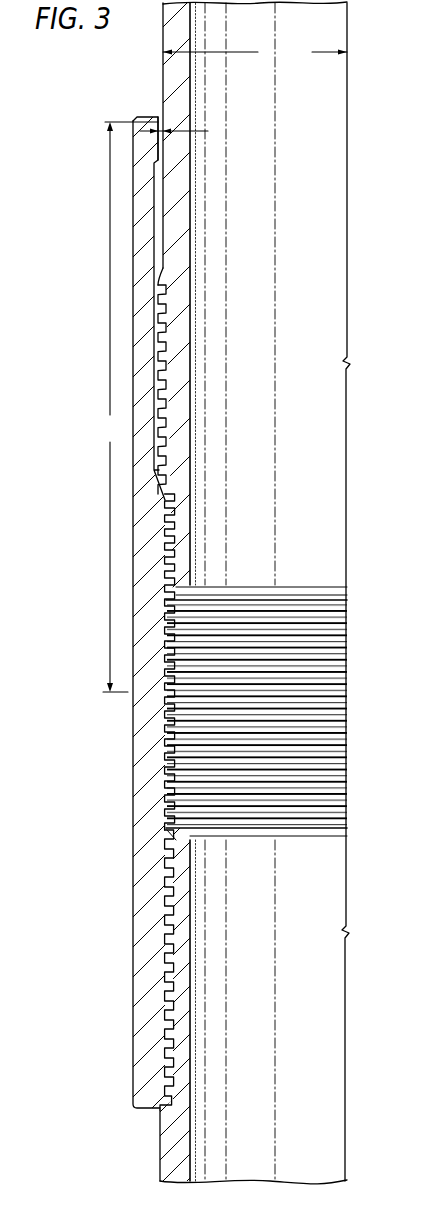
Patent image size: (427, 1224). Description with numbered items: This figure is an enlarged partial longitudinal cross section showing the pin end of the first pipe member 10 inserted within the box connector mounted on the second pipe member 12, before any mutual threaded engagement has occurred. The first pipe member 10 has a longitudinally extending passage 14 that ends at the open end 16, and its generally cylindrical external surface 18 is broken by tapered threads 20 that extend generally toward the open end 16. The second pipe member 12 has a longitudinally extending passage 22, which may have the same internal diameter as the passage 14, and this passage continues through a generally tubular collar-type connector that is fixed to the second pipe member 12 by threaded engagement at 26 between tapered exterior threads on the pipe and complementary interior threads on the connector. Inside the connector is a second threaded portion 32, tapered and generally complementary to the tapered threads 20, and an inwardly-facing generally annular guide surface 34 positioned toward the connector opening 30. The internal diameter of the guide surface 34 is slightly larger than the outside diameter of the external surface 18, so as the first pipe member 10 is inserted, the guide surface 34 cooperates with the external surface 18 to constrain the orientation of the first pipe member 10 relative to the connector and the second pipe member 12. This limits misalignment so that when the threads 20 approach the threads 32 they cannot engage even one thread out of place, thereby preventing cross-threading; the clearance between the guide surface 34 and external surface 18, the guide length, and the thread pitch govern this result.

The first pipe member 10 is at (68, 80).
The second pipe member 12 is at (80, 1158).
The longitudinally extending passage 14 is at (190, 254).
The open end 16 is at (337, 594).
The external surface 18 is at (158, 280).
The tapered threads 20 is at (168, 378).
The longitudinally extending passage 22 is at (197, 1137).
The threaded engagement 26 is at (170, 957).
The connector opening 30 is at (163, 116).
The second threaded portion 32 is at (188, 743).
The guide surface 34 is at (159, 147).